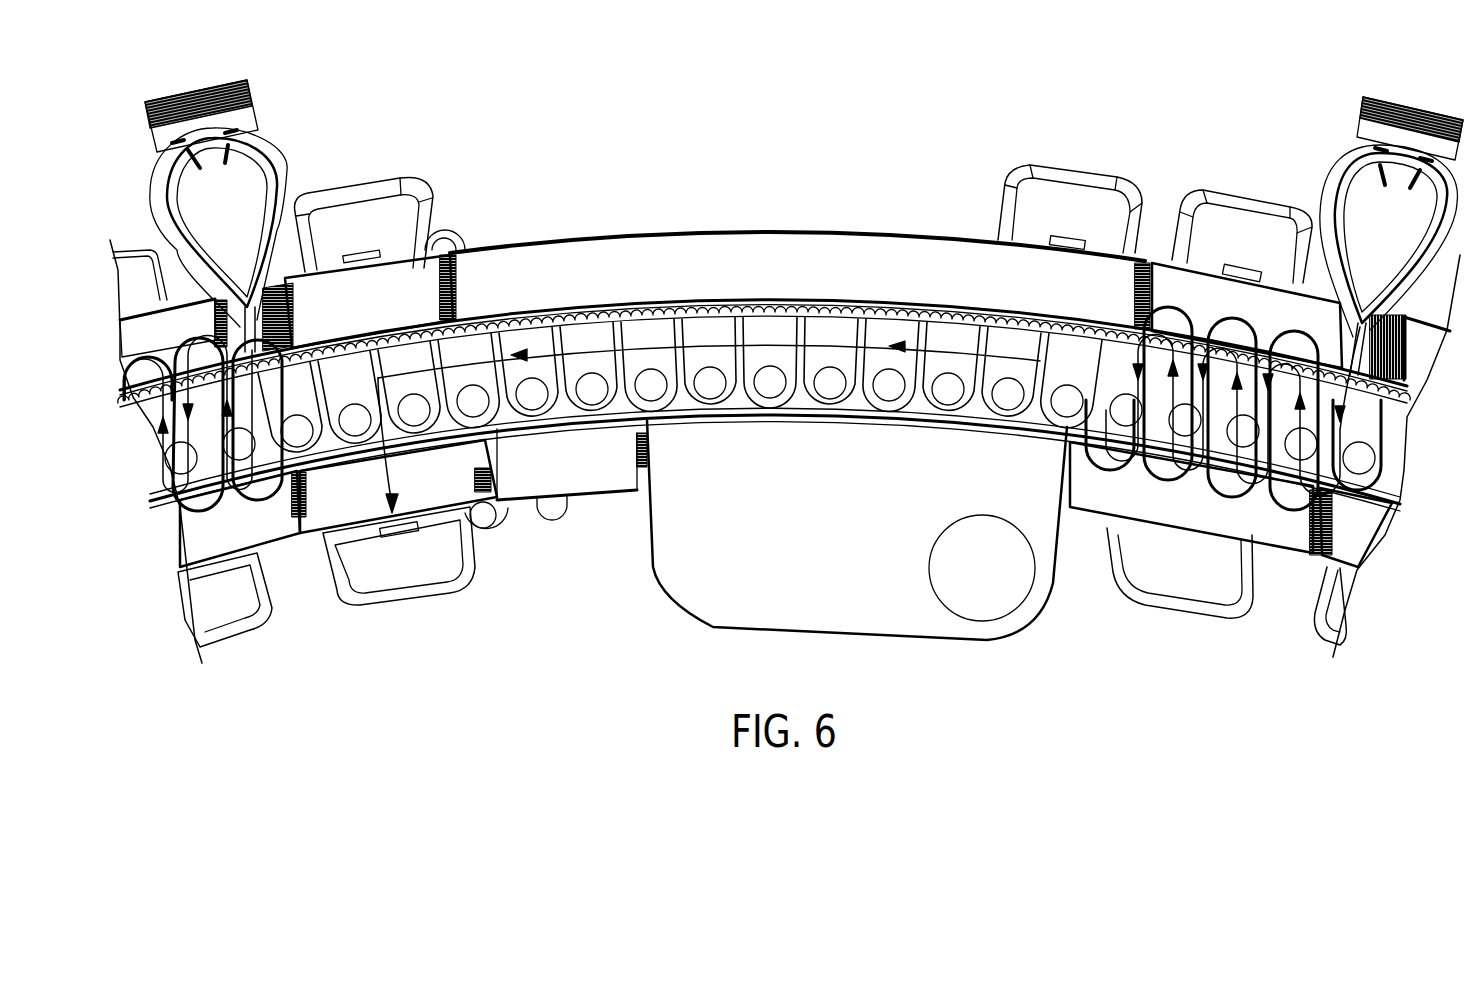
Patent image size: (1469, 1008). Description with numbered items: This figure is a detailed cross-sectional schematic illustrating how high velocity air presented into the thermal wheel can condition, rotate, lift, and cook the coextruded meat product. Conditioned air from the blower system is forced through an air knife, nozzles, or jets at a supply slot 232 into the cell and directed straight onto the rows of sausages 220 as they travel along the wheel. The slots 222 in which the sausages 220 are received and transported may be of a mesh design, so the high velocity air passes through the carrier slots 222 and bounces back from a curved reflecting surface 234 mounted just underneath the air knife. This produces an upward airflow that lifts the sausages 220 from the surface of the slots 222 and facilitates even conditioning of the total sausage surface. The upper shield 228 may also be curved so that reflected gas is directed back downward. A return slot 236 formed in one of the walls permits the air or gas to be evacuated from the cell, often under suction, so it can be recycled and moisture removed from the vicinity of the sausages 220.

The sausages 220 is at (597, 386).
The slots 222 is at (767, 402).
The upper shield 228 is at (805, 232).
The supply slot 232 is at (1355, 340).
The curved reflecting surface 234 is at (257, 497).
The return slot 236 is at (1100, 520).